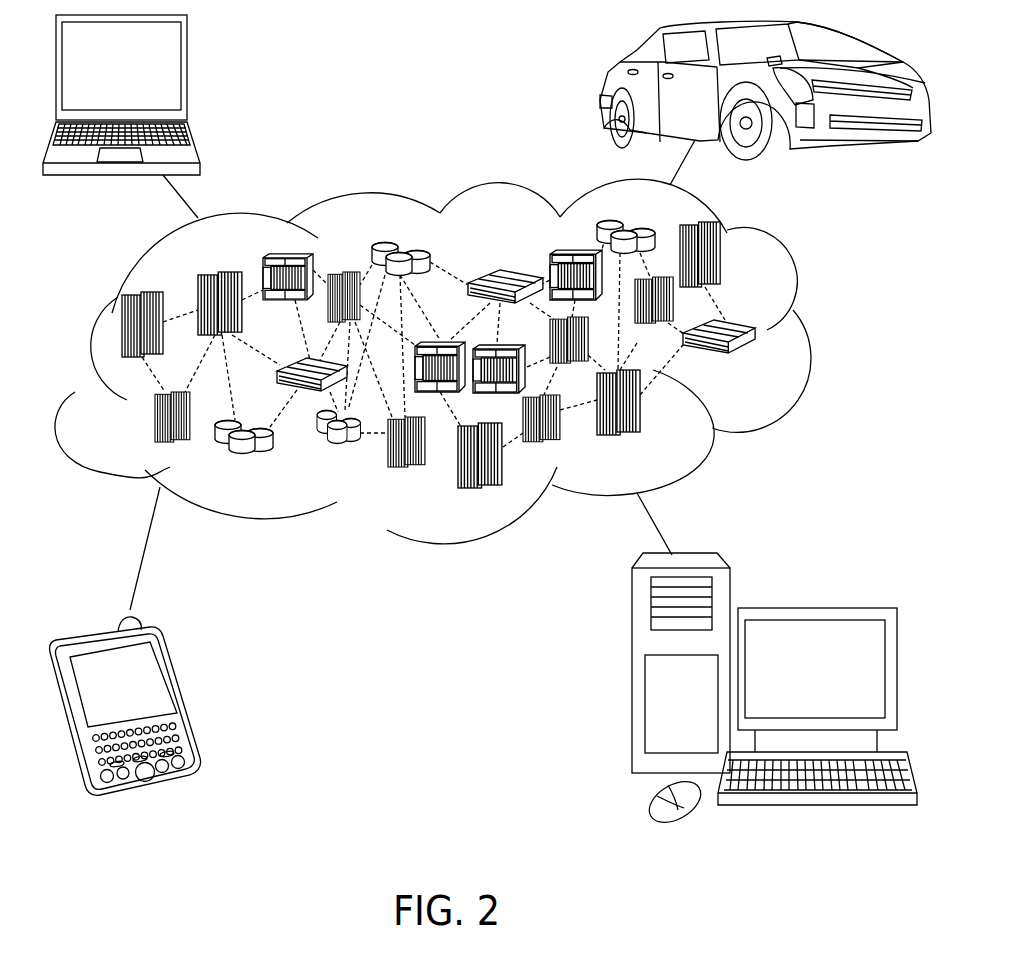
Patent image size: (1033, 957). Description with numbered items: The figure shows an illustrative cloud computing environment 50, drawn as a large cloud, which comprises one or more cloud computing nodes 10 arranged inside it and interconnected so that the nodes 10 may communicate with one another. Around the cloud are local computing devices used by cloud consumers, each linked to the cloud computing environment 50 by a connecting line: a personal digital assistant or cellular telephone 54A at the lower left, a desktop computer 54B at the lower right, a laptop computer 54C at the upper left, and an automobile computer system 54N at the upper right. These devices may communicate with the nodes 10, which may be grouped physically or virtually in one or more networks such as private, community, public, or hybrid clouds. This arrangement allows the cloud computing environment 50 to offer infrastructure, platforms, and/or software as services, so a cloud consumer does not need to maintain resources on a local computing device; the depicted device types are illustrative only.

The laptop computer 54C is at (187, 67).
The automobile computer system 54N is at (602, 88).
The cloud computing environment 50 is at (807, 327).
The cloud computing nodes 10 is at (783, 380).
The personal digital assistant or cellular telephone 54A is at (177, 700).
The desktop computer 54B is at (838, 608).